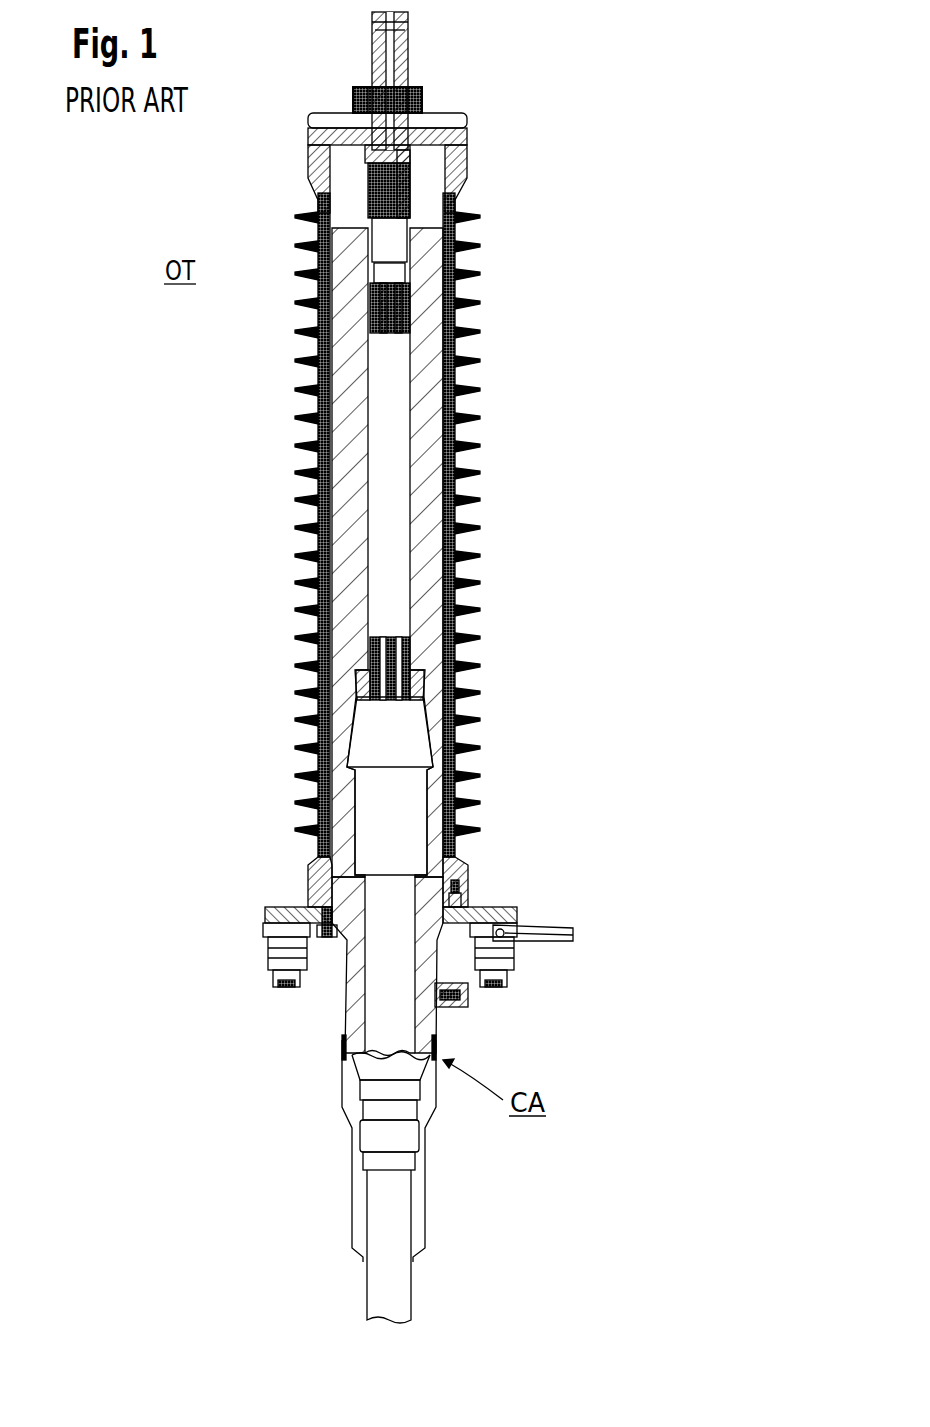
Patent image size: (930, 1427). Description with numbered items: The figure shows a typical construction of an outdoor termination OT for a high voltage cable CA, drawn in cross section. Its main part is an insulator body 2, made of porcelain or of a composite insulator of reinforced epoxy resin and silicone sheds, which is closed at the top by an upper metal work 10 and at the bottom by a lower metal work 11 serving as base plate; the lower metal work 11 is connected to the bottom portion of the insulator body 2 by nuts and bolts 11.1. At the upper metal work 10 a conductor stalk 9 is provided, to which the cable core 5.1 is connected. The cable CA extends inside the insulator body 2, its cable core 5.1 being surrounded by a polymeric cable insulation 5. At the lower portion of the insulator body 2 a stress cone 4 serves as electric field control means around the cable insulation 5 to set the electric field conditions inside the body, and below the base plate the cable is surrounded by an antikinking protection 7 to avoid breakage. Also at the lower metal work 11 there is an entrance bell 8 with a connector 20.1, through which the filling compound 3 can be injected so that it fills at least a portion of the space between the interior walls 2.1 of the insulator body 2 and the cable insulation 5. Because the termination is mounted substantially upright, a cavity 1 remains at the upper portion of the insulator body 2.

The cavity 1 is at (425, 180).
The insulator body 2 is at (377, 550).
The interior walls 2.1 is at (317, 494).
The filling compound 3 is at (430, 392).
The stress cone 4 is at (413, 748).
The cable insulation 5 is at (410, 663).
The cable core 5.1 is at (392, 637).
The antikinking protection 7 is at (345, 1108).
The entrance bell 8 is at (345, 1000).
The conductor stalk 9 is at (392, 62).
The upper metal work 10 is at (317, 125).
The lower metal work 11 is at (268, 918).
The nuts and bolts 11.1 is at (270, 977).
The connector 20.1 is at (468, 997).